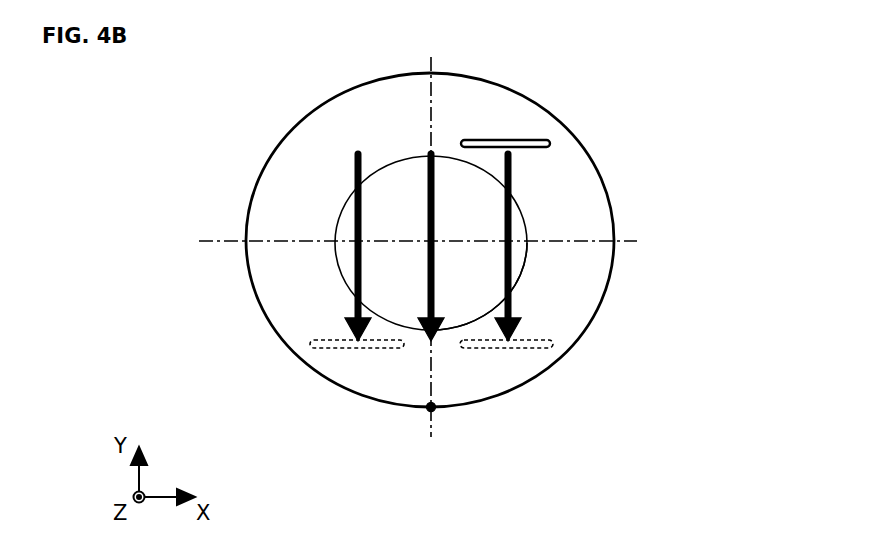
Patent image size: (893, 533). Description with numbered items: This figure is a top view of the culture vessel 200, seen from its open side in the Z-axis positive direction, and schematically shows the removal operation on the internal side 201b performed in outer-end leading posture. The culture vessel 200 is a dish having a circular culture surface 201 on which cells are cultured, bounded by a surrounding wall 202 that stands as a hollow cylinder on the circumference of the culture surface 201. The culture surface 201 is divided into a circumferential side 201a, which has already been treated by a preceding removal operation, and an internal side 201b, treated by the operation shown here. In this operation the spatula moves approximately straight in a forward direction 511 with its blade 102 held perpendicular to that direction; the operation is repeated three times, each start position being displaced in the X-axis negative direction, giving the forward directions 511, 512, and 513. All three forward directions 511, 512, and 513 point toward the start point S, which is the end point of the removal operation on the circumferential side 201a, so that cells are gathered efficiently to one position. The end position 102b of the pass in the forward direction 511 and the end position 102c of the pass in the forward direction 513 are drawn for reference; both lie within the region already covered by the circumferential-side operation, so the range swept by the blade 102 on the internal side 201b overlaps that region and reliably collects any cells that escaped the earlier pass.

The culture vessel 200 is at (430, 214).
The surrounding wall 202 is at (545, 107).
The culture surface 201 is at (550, 243).
The circumferential side 201a is at (563, 190).
The internal side 201b is at (525, 230).
The blade 102 is at (480, 139).
The end position 102b is at (500, 348).
The end position 102c is at (367, 348).
The forward direction 511 is at (512, 173).
The forward direction 512 is at (425, 163).
The forward direction 513 is at (353, 165).
The start point S is at (428, 410).